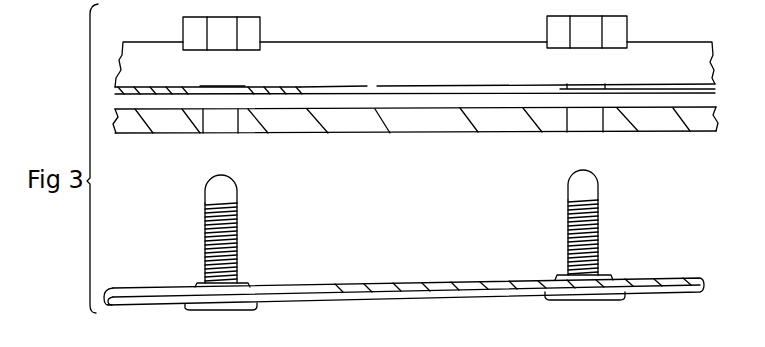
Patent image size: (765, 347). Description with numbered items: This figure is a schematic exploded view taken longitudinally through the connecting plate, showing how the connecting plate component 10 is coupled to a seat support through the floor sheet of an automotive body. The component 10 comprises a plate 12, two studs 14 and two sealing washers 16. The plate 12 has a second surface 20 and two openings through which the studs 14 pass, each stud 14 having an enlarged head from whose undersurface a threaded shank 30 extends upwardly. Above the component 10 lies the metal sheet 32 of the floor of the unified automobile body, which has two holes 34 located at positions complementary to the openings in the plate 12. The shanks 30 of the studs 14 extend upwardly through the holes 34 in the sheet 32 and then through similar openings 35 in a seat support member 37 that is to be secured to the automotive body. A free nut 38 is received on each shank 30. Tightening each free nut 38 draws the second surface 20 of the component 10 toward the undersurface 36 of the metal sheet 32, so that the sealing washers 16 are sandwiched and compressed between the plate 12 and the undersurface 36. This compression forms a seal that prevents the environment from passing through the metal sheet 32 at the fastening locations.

The connecting plate component 10 is at (151, 259).
The plate 12 is at (456, 254).
The stud 14 is at (208, 321).
The sealing washer 16 is at (248, 283).
The second surface 20 is at (343, 268).
The threaded shank 30 is at (237, 226).
The metal sheet 32 is at (452, 145).
The hole 34 is at (232, 134).
The opening 35 is at (232, 87).
The undersurface 36 is at (337, 134).
The seat support member 37 is at (411, 81).
The free nut 38 is at (260, 26).